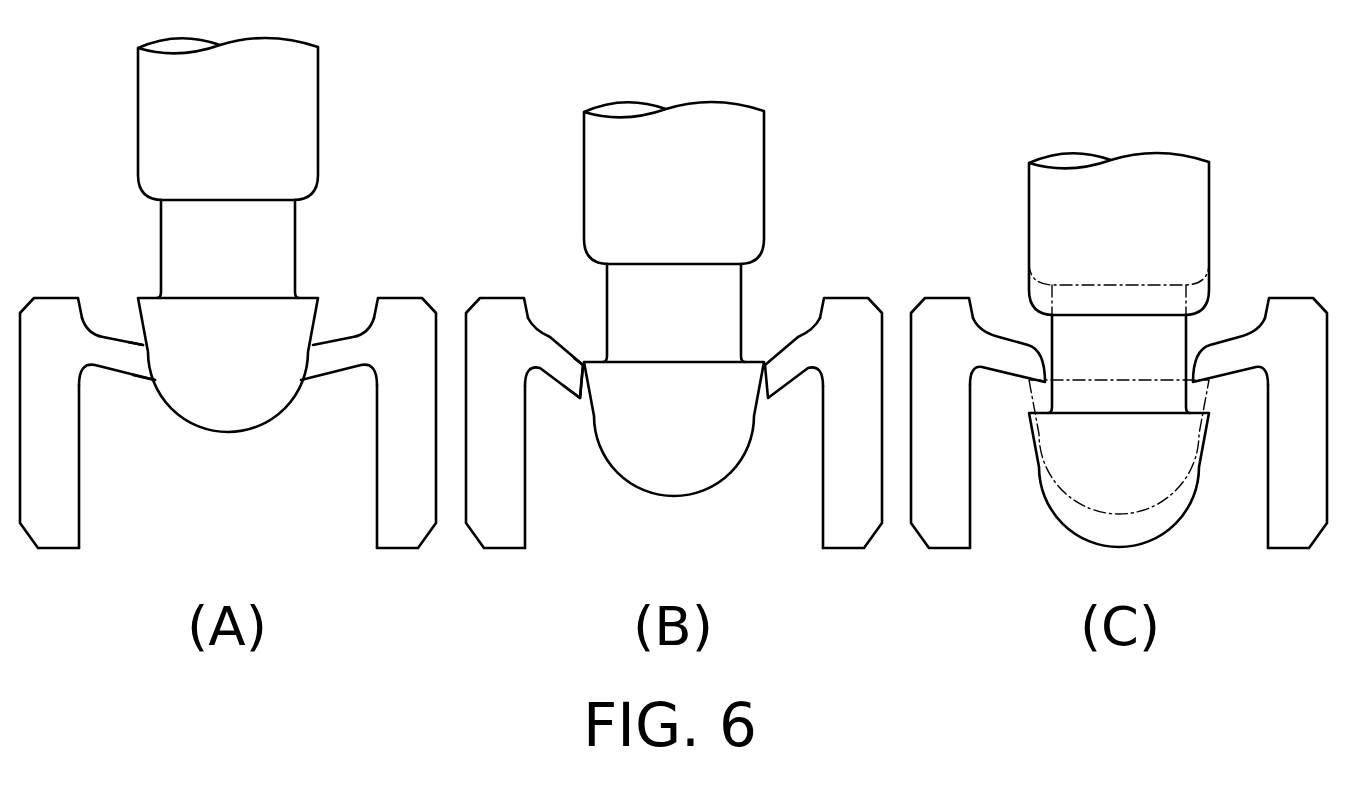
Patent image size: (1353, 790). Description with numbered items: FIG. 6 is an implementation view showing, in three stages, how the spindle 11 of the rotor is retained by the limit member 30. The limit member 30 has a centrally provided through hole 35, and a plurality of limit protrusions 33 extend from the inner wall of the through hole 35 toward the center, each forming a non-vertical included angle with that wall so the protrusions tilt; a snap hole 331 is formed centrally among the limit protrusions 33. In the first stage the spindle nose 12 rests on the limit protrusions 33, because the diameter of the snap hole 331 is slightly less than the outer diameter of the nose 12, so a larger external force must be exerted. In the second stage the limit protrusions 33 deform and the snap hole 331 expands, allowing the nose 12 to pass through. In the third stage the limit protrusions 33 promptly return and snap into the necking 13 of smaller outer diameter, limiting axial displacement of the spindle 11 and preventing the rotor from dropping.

The spindle 11 is at (293, 107).
The spindle nose 12 is at (247, 392).
The necking 13 is at (272, 243).
The limit member 30 is at (50, 312).
The limit protrusion 33 is at (125, 353).
The snap hole 331 is at (161, 379).
The through hole 35 is at (80, 493).